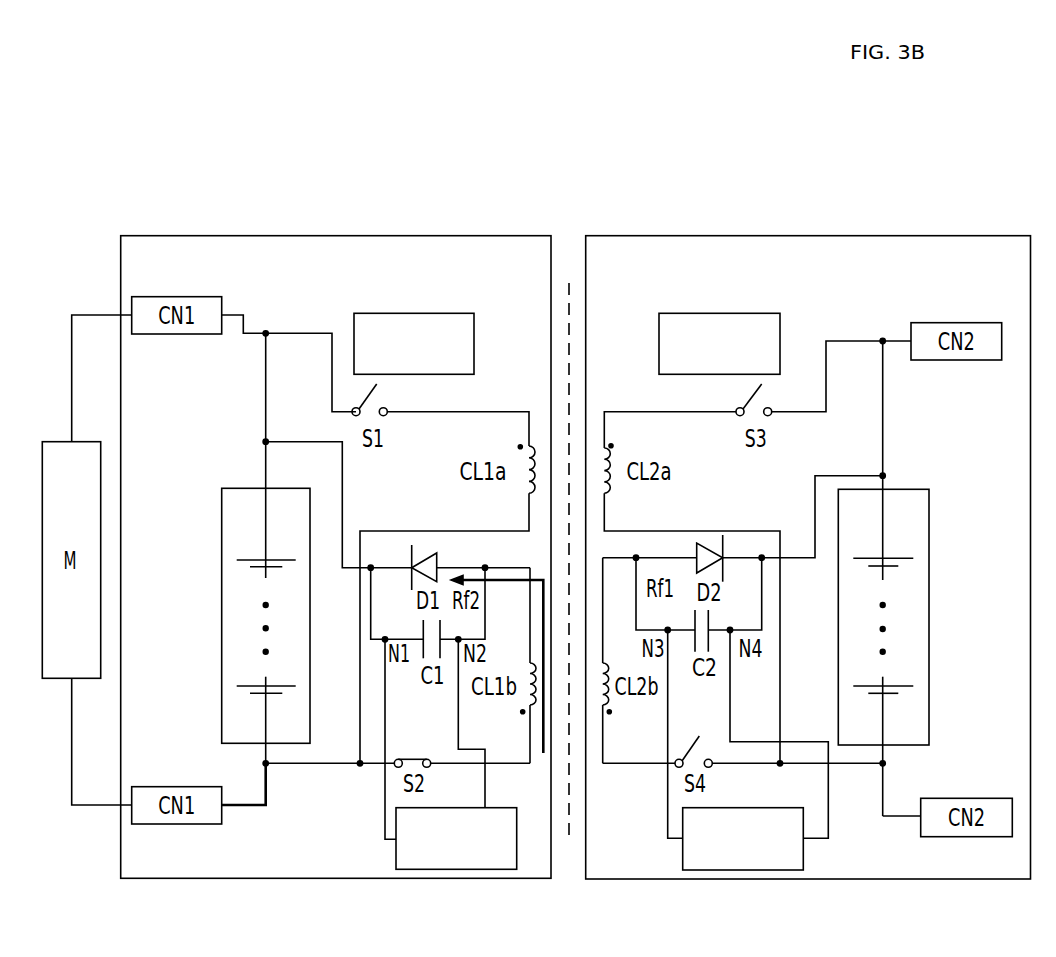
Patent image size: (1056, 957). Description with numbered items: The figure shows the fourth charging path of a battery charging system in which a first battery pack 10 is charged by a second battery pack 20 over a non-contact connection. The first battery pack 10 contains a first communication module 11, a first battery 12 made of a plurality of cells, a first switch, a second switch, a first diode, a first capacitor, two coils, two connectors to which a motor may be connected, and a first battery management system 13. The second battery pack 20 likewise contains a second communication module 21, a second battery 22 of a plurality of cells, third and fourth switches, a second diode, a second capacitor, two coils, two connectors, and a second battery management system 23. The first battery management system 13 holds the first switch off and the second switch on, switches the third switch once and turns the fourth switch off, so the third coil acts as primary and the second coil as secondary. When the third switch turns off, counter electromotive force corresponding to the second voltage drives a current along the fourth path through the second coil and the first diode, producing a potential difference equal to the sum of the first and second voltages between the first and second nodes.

The first battery pack 10 is at (417, 269).
The first communication module 11 is at (414, 343).
The first battery 12 is at (221, 530).
The first battery management system 13 is at (456, 839).
The second battery pack 20 is at (827, 269).
The second communication module 21 is at (719, 343).
The second battery 22 is at (929, 515).
The second battery management system 23 is at (743, 839).